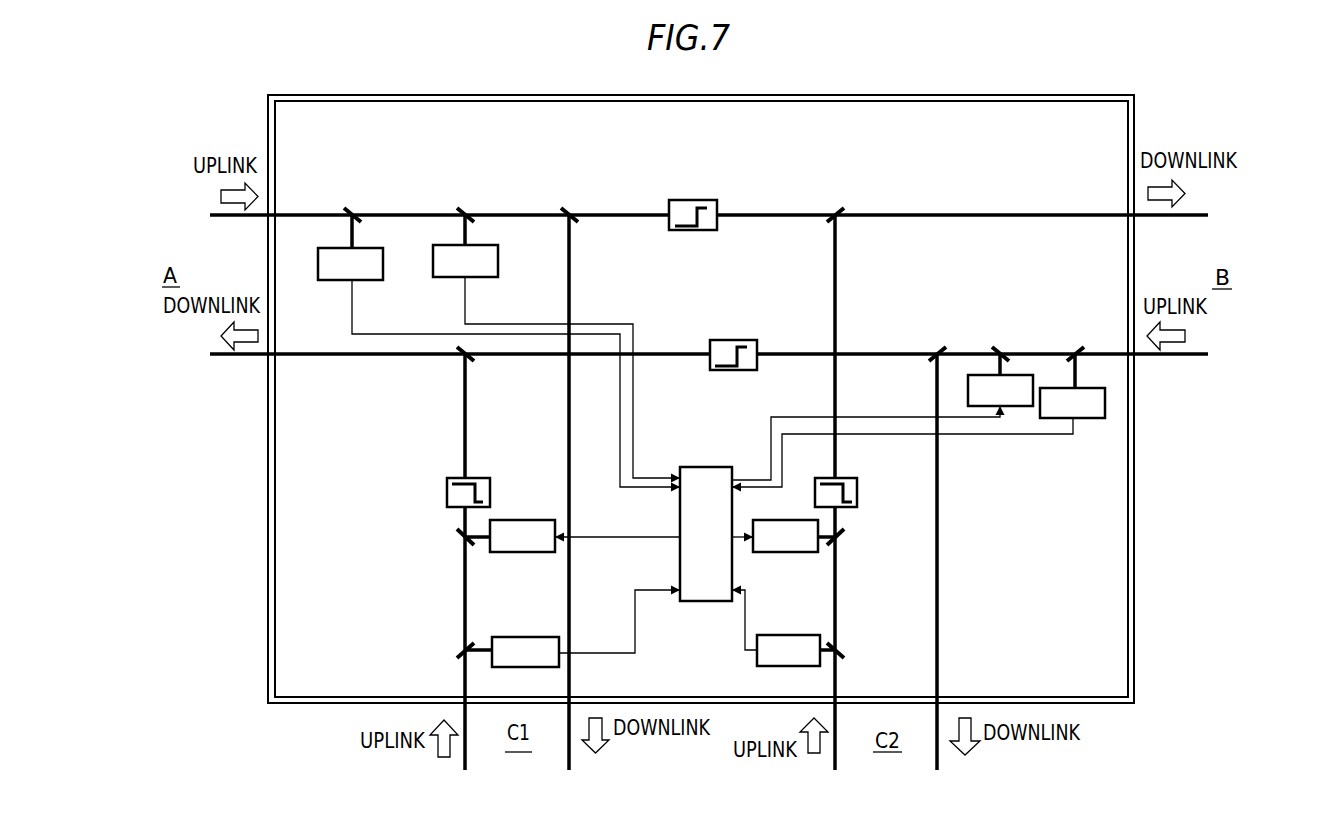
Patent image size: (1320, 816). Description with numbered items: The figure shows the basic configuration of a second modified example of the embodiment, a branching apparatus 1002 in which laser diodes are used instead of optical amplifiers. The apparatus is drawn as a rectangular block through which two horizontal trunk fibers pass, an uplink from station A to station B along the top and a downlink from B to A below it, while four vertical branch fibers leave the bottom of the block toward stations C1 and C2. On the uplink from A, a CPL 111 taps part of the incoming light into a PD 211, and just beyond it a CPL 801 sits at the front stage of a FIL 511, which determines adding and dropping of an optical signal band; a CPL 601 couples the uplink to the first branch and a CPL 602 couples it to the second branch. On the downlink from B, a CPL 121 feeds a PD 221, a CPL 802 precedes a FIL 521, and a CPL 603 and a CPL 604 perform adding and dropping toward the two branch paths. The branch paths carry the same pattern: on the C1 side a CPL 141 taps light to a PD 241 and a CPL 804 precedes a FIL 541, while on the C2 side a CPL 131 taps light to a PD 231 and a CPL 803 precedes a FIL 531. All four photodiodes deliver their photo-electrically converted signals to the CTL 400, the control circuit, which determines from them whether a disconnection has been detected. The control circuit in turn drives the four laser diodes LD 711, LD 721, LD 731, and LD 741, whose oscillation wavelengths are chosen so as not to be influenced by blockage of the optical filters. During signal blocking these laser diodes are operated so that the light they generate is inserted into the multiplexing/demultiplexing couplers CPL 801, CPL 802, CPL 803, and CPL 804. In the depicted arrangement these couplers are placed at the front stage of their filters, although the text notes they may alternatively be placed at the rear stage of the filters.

The branching apparatus 1002 is at (1053, 95).
The CPL 111 is at (360, 190).
The CPL 801 is at (477, 190).
The CPL 601 is at (577, 190).
The FIL 511 is at (714, 182).
The CPL 602 is at (826, 207).
The PD 211 is at (330, 282).
The LD 711 is at (447, 279).
The FIL 521 is at (745, 340).
The CPL 603 is at (932, 351).
The CPL 604 is at (470, 362).
The CPL 802 is at (1003, 328).
The CPL 121 is at (1080, 346).
The LD 721 is at (968, 386).
The PD 221 is at (1080, 418).
The FIL 541 is at (447, 492).
The CPL 804 is at (460, 537).
The LD 741 is at (520, 553).
The PD 241 is at (498, 637).
The CPL 141 is at (460, 655).
The FIL 531 is at (858, 493).
The CPL 803 is at (842, 534).
The LD 731 is at (783, 553).
The control circuit 400 is at (700, 601).
The PD 231 is at (757, 660).
The CPL 131 is at (842, 656).